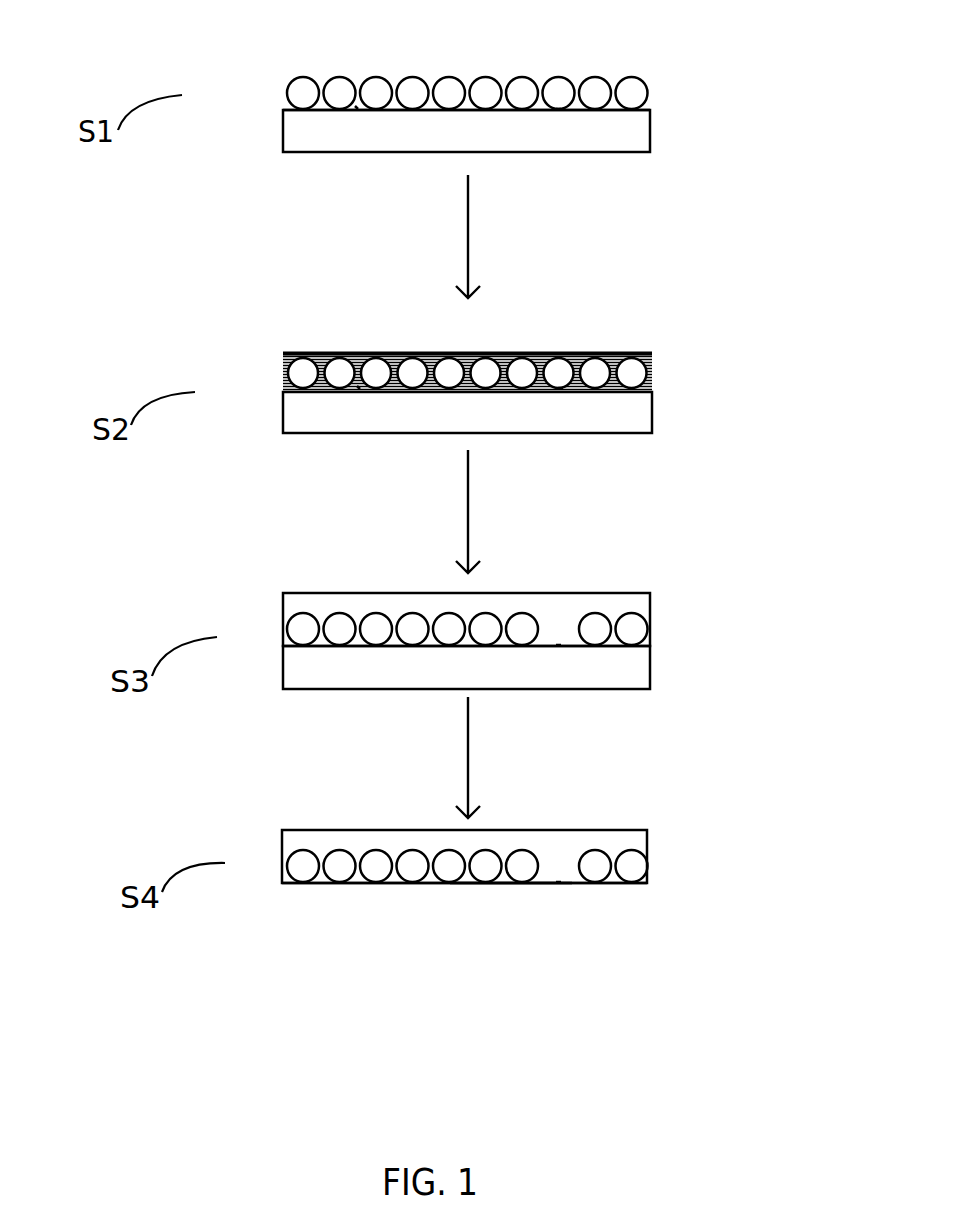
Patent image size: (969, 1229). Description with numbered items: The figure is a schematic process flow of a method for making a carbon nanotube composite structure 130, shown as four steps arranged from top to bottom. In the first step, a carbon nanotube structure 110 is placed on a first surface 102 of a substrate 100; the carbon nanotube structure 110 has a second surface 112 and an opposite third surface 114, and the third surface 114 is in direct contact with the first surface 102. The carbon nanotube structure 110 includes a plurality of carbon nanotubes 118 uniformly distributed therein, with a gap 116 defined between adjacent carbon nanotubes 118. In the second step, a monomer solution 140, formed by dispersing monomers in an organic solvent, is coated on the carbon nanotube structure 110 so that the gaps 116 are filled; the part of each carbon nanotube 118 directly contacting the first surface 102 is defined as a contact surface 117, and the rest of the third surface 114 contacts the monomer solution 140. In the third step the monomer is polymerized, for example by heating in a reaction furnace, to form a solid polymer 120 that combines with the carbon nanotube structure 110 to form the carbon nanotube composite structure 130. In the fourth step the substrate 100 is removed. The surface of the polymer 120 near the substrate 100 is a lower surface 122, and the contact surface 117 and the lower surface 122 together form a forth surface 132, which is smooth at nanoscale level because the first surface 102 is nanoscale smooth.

The substrate 100 is at (622, 142).
The first surface 102 is at (318, 112).
The carbon nanotube structure 110 is at (643, 80).
The second surface 112 is at (560, 78).
The third surface 114 is at (297, 108).
The gap 116 is at (358, 98).
The contact surface 117 is at (560, 108).
The carbon nanotubes 118 is at (375, 100).
The polymer 120 is at (568, 612).
The lower surface 122 is at (503, 883).
The carbon nanotube composite structure 130 is at (735, 543).
The forth surface 132 is at (572, 978).
The monomer solution 140 is at (580, 350).